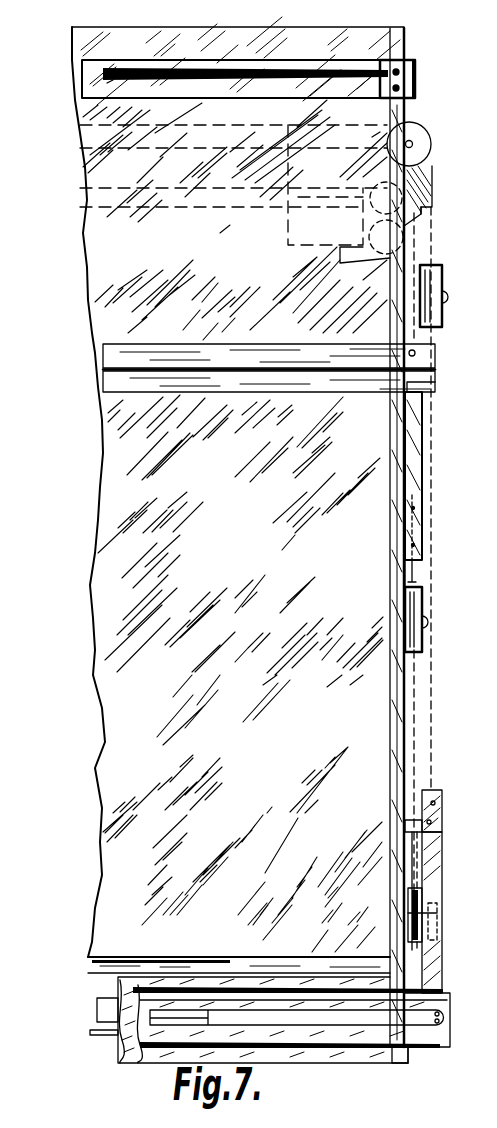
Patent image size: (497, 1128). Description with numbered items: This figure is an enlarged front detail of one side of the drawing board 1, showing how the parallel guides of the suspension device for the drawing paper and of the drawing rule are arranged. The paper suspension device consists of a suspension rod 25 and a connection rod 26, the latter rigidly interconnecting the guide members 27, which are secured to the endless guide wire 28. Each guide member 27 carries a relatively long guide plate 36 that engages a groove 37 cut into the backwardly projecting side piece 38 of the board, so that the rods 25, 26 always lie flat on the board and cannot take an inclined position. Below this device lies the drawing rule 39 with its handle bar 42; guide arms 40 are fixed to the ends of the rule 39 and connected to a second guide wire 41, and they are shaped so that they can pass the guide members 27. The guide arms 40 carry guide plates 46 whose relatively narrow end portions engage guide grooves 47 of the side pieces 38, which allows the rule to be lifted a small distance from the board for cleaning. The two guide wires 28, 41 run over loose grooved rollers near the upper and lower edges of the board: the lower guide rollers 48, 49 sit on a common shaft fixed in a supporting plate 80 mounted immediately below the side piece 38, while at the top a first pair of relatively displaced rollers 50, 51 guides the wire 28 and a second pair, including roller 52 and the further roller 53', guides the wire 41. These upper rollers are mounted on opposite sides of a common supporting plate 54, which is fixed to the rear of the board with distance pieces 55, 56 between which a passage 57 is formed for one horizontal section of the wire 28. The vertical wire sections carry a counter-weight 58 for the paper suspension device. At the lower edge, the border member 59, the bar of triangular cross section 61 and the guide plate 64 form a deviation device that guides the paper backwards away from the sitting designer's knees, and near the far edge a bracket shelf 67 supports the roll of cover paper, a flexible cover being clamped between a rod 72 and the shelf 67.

The drawing board 1 is at (138, 55).
The suspension rod 25 is at (115, 380).
The connection rod 26 is at (115, 352).
The guide members 27 is at (410, 458).
The endless guide wire 28 is at (414, 685).
The guide plates 36 is at (413, 530).
The grooves 37 is at (412, 580).
The side pieces 38 is at (405, 50).
The drawing rule 39 is at (280, 1040).
The guide arms 40 is at (430, 870).
The second guide wire 41 is at (432, 652).
The handle bar 42 is at (332, 1025).
The guide plates 46 is at (430, 823).
The guide grooves 47 is at (412, 571).
The lower guide roller 48 is at (418, 892).
The lower guide roller 49 is at (433, 910).
The upper guide roller 50 is at (496, 197).
The upper guide roller 51 is at (405, 240).
The upper guide roller 52 is at (496, 124).
The latch 53' is at (451, 296).
The supporting plate 54 is at (418, 200).
The distance piece 55 is at (380, 132).
The distance piece 56 is at (342, 258).
The passage 57 is at (292, 197).
The counter-weight 58 is at (422, 603).
The border member 59 is at (127, 1057).
The bar of triangular cross section 61 is at (97, 1010).
The guide plate 64 is at (90, 1032).
The bracket shelf 67 is at (147, 68).
The rod 72 is at (107, 83).
The supporting plate 80 is at (402, 1058).